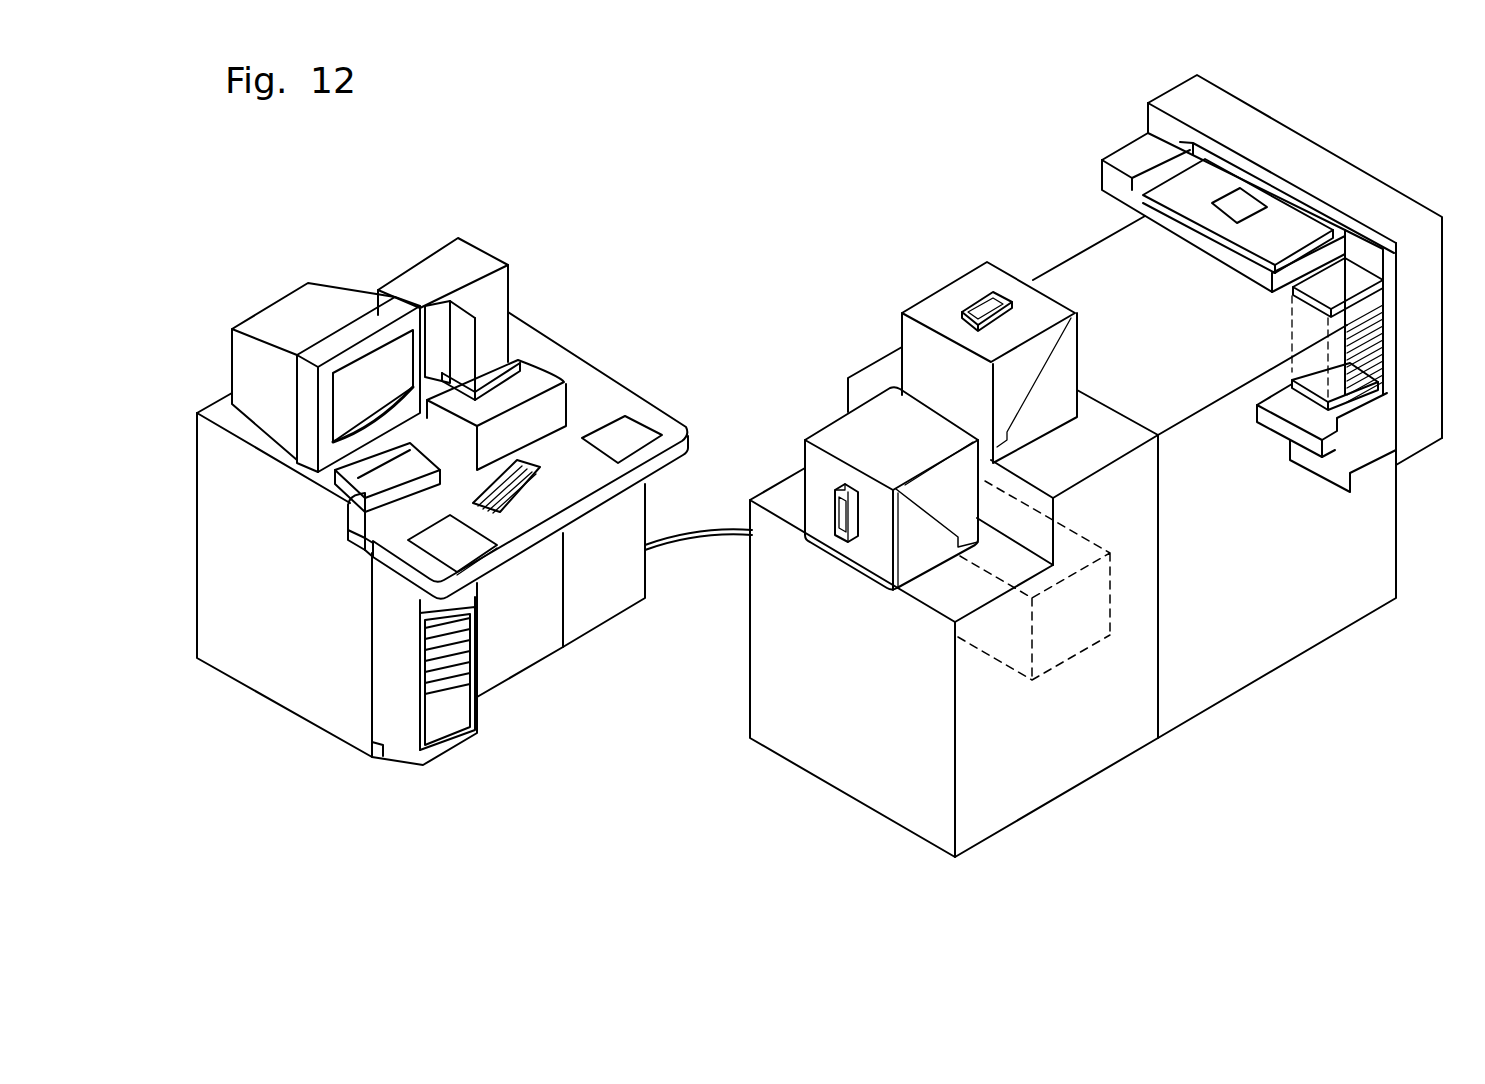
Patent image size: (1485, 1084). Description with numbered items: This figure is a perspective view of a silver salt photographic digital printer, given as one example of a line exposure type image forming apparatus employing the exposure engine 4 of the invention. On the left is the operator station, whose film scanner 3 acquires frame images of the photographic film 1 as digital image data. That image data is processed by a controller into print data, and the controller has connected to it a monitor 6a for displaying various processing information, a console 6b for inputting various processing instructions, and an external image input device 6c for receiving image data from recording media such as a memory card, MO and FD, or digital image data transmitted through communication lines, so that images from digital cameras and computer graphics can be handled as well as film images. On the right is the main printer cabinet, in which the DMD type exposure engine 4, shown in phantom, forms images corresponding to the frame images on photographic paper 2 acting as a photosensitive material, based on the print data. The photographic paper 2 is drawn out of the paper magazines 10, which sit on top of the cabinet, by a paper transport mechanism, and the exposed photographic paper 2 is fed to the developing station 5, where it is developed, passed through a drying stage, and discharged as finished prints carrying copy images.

The photographic film 1 is at (515, 336).
The photographic paper 2 is at (1223, 195).
The film scanner 3 is at (474, 489).
The exposure engine 4 is at (1110, 589).
The developing station 5 is at (1096, 466).
The monitor 6a is at (337, 310).
The console 6b is at (533, 480).
The external image input device 6c is at (477, 537).
The paper magazines 10 is at (886, 410).